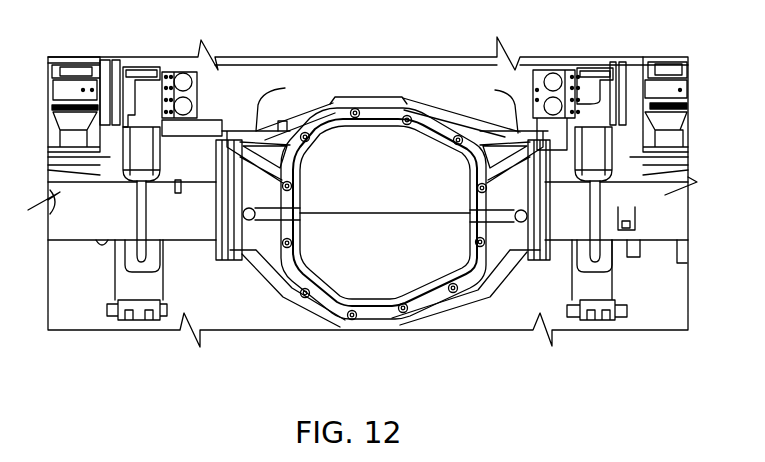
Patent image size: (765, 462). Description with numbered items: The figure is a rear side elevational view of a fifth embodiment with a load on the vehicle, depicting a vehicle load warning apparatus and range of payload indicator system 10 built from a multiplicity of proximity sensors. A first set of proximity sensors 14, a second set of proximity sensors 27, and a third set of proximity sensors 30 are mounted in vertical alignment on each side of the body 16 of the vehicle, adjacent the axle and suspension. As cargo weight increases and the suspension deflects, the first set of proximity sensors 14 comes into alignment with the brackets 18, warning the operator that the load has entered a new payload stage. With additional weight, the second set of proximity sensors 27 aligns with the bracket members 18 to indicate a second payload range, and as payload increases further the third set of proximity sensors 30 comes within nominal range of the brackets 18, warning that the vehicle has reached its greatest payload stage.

The vehicle load warning apparatus and range of payload indicator system 10 is at (362, 192).
The first set of proximity sensors 14 is at (573, 133).
The body 16 is at (140, 92).
The brackets 18 is at (285, 88).
The second set of proximity sensors 27 is at (117, 100).
The third set of proximity sensors 30 is at (197, 83).